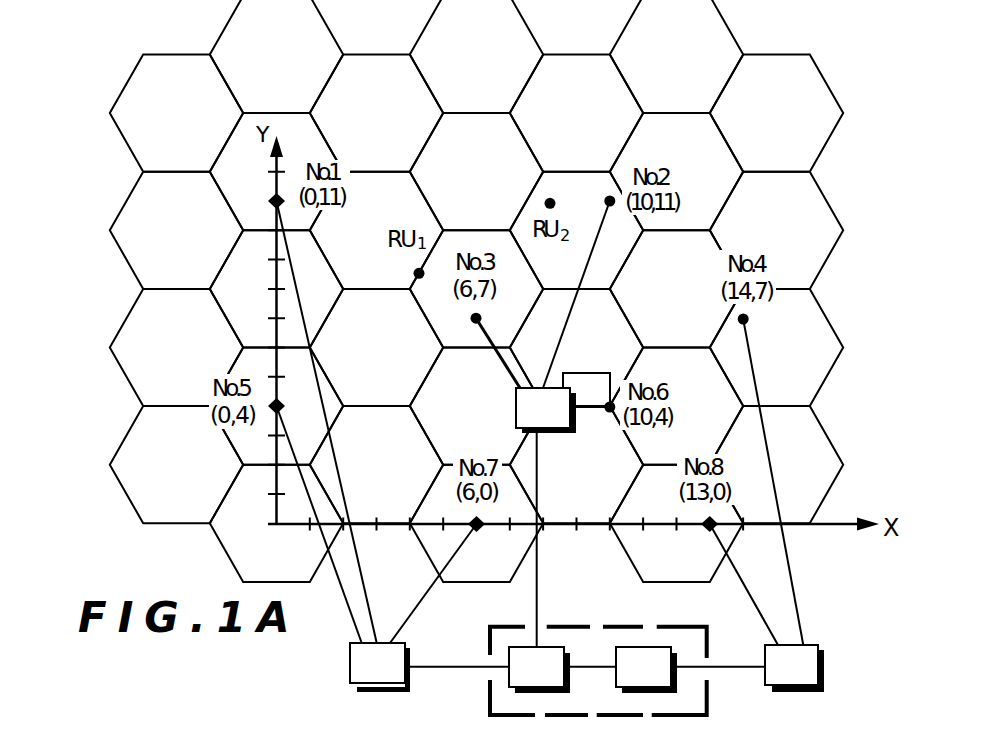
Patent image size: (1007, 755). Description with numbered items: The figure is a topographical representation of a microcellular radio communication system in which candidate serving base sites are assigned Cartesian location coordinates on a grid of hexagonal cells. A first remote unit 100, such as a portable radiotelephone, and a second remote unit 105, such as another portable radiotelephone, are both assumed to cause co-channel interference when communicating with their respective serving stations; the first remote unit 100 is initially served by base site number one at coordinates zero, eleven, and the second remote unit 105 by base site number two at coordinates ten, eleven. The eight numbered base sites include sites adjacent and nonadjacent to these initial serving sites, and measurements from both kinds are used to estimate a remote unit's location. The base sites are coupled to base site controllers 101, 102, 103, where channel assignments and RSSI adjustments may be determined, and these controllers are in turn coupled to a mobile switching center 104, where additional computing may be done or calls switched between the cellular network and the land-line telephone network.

The first remote unit RU1 100 is at (417, 272).
The base site controller 101 is at (350, 666).
The base site controller 102 is at (557, 434).
The base site controller 103 is at (825, 667).
The mobile switching center 104 is at (577, 626).
The second remote unit RU2 105 is at (548, 202).